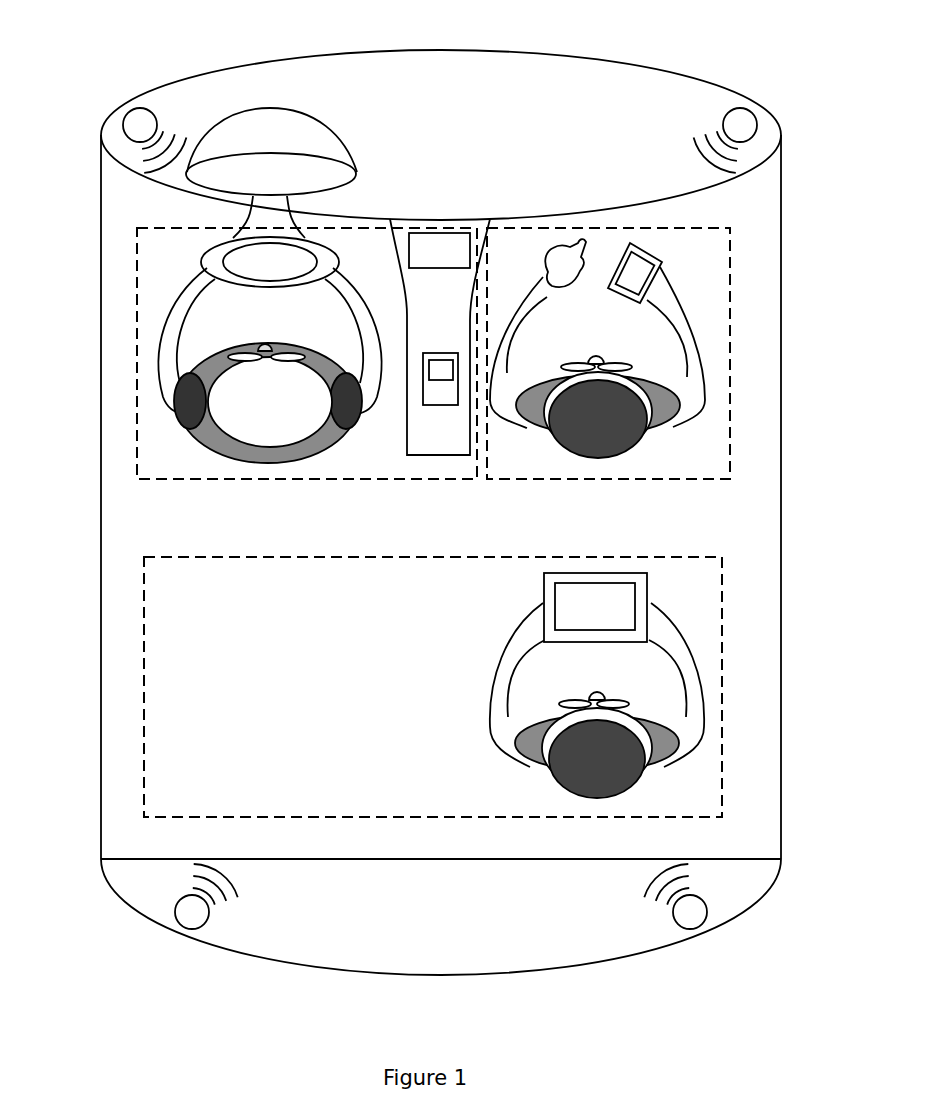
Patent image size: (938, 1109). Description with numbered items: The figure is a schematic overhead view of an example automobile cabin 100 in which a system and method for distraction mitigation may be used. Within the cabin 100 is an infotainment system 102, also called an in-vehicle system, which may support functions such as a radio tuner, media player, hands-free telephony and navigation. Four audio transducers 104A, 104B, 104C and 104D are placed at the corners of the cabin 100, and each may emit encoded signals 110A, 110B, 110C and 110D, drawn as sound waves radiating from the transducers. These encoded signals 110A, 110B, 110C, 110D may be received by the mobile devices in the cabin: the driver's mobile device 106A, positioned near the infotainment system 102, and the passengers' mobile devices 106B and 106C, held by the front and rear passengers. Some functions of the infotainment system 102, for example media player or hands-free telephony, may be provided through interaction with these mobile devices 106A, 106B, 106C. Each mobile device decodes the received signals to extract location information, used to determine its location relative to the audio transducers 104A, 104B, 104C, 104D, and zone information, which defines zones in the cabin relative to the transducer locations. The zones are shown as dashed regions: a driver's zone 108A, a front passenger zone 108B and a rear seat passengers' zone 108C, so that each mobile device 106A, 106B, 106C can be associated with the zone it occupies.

The automobile cabin 100 is at (238, 67).
The infotainment system 102 is at (450, 230).
The audio transducer 104A is at (134, 108).
The audio transducer 104B is at (745, 108).
The audio transducer 104C is at (700, 929).
The audio transducer 104D is at (182, 929).
The driver's mobile device 106A is at (437, 407).
The passenger's mobile device 106B is at (662, 262).
The passenger's mobile device 106C is at (544, 590).
The driver's zone 108A is at (137, 305).
The front passenger zone 108B is at (672, 336).
The rear seat passengers' zone 108C is at (372, 687).
The encoded signal 110A is at (102, 133).
The encoded signal 110B is at (703, 147).
The encoded signal 110C is at (663, 900).
The encoded signal 110D is at (221, 902).